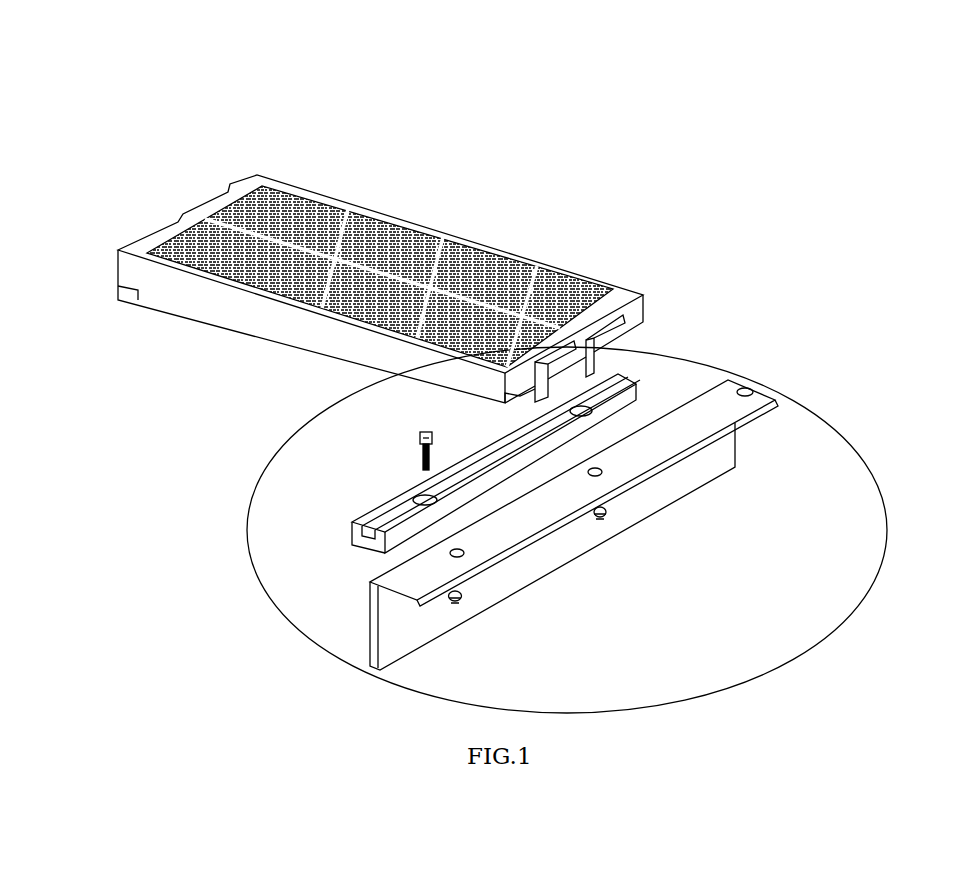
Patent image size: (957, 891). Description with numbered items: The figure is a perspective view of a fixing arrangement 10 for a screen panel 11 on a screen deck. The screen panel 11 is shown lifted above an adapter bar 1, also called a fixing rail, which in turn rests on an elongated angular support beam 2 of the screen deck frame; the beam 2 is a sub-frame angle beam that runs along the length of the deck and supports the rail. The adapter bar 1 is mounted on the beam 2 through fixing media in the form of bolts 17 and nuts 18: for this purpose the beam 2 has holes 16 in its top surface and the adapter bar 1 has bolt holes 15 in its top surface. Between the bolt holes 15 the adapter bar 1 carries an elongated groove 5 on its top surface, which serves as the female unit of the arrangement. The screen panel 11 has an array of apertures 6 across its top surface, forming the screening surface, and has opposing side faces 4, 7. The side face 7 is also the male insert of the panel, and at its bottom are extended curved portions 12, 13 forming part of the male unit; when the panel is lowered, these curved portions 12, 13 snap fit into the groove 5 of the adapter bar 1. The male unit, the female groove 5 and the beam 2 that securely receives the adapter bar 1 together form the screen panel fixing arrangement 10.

The adapter bar 1 is at (645, 389).
The screen deck frame support beam 2 is at (701, 489).
The side face 4 is at (168, 226).
The elongated groove 5 is at (492, 457).
The apertures 6 is at (275, 188).
The male insert 7 is at (620, 331).
The fixing arrangement 10 is at (304, 656).
The screen panel 11 is at (410, 203).
The extended curved portion 12 is at (543, 386).
The extended curved portion 13 is at (524, 388).
The bolt holes 15 is at (410, 502).
The holes 16 is at (745, 382).
The bolts 17 is at (416, 460).
The nuts 18 is at (604, 524).